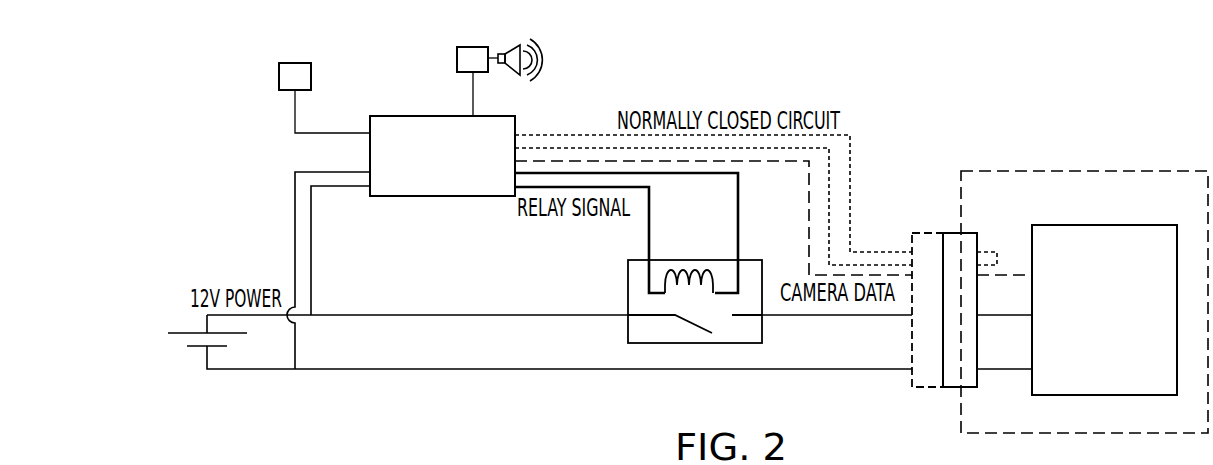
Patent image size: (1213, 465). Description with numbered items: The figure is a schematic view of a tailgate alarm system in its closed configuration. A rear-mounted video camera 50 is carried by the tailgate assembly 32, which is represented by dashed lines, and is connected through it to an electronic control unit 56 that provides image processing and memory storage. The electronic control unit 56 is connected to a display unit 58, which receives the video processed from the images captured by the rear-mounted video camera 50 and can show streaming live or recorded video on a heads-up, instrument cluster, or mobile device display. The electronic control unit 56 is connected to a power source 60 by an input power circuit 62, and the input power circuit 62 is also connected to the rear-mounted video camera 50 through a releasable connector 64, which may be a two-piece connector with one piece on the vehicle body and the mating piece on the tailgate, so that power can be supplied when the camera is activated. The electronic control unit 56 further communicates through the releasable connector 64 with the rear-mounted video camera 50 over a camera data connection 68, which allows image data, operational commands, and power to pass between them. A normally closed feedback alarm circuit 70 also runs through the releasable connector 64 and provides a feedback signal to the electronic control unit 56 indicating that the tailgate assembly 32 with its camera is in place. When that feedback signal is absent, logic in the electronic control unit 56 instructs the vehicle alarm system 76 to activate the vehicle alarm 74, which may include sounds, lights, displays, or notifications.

The tailgate assembly 32 is at (1172, 170).
The rear-mounted video camera 50 is at (1107, 225).
The electronic control unit 56 is at (391, 120).
The display unit 58 is at (279, 74).
The power source 60 is at (195, 362).
The input power circuit 62 is at (295, 230).
The releasable connector 64 is at (932, 232).
The camera data connection 68 is at (809, 190).
The normally closed feedback alarm circuit 70 is at (560, 133).
The vehicle alarm 74 is at (500, 65).
The vehicle alarm system 76 is at (457, 56).